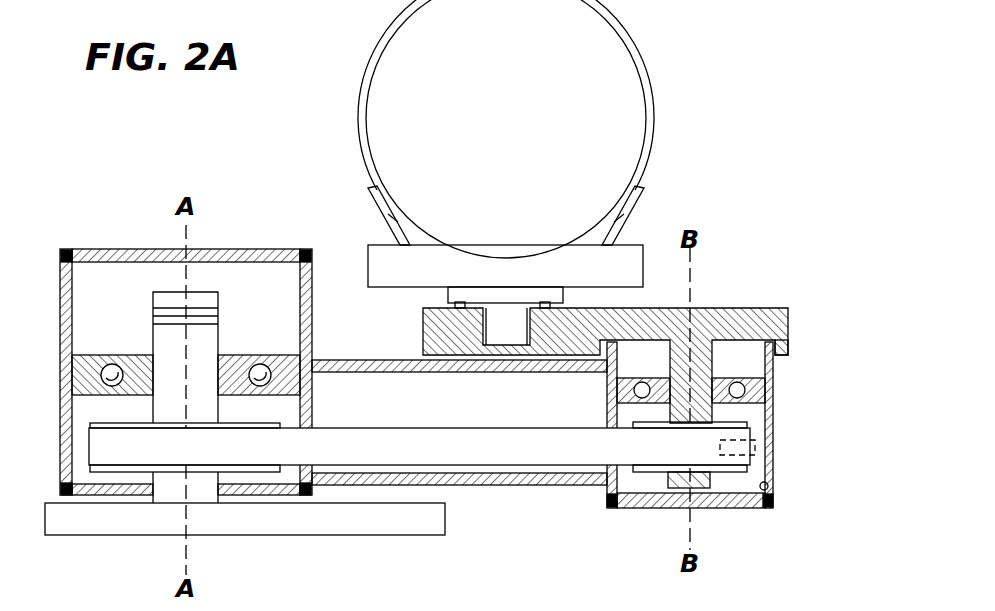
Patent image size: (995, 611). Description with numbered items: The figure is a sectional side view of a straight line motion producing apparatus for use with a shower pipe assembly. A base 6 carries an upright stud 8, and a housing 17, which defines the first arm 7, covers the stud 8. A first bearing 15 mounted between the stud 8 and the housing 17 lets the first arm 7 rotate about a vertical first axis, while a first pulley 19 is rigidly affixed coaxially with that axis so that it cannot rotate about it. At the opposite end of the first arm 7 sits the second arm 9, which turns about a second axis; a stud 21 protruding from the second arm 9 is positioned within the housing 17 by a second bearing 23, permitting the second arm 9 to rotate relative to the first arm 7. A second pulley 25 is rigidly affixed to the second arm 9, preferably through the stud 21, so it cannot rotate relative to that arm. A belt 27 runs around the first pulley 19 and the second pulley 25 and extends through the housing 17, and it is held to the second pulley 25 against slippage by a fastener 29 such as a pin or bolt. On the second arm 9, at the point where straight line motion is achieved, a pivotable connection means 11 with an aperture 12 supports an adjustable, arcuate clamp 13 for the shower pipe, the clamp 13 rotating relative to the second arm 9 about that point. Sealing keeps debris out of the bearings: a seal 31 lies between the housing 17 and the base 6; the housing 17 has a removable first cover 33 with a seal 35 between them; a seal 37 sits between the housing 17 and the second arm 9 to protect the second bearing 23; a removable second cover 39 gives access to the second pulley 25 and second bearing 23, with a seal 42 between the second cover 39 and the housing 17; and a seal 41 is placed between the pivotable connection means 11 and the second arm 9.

The base 6 is at (108, 533).
The first arm 7 is at (345, 362).
The stud 8 is at (207, 340).
The second arm 9 is at (765, 310).
The pivotable connection means 11 is at (470, 292).
The aperture 12 is at (477, 328).
The clamp 13 is at (648, 128).
The first bearing 15 is at (108, 372).
The housing 17 is at (62, 282).
The first pulley 19 is at (107, 422).
The stud 21 is at (678, 358).
The second bearing 23 is at (723, 378).
The second pulley 25 is at (650, 470).
The belt 27 is at (521, 440).
The fastener 29 is at (757, 452).
The seal 31 is at (214, 494).
The first cover 33 is at (248, 252).
The seal 35 is at (305, 252).
The seal 37 is at (782, 354).
The second cover 39 is at (728, 510).
The seal 41 is at (548, 305).
The seal 42 is at (768, 488).